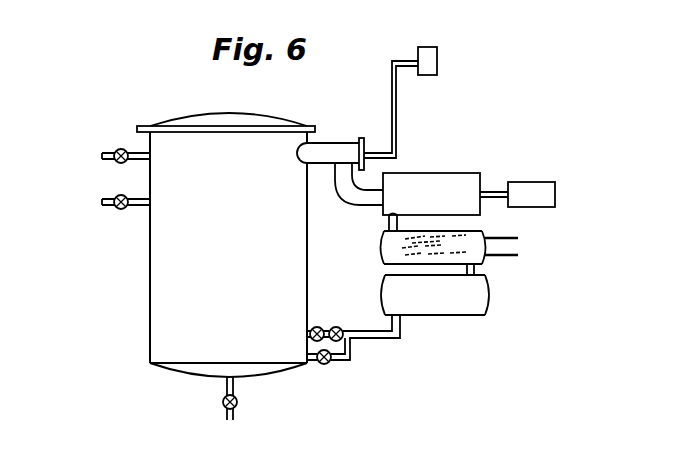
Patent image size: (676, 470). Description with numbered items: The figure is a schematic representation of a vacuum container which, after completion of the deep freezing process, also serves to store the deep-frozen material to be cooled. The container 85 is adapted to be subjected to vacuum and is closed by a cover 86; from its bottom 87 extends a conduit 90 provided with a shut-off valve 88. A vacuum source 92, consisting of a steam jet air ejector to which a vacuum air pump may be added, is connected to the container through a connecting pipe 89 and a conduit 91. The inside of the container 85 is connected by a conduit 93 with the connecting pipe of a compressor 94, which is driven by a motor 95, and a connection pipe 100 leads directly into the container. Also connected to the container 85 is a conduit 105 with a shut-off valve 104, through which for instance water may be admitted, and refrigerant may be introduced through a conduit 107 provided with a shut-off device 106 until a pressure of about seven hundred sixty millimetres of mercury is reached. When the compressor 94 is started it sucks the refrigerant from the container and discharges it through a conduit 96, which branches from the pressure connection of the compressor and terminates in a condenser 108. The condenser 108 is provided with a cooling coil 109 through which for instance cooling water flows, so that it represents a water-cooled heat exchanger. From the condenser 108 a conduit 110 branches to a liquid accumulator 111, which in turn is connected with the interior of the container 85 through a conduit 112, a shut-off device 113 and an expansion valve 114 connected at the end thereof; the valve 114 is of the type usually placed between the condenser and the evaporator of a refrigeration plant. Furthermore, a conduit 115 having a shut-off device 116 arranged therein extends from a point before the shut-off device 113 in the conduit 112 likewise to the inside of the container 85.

The container 85 is at (152, 330).
The cover 86 is at (177, 124).
The bottom 87 is at (173, 376).
The shut-off valve 88 is at (222, 403).
The connecting pipe 89 is at (340, 143).
The conduit 90 is at (235, 416).
The conduit 91 is at (390, 77).
The vacuum source 92 is at (438, 63).
The conduit 93 is at (353, 202).
The compressor 94 is at (450, 173).
The motor 95 is at (538, 182).
The conduit 96 is at (388, 230).
The connection pipe 100 is at (313, 158).
The shut-off valve 104 is at (125, 208).
The conduit 105 is at (103, 208).
The shut-off device 106 is at (115, 163).
The conduit 107 is at (105, 152).
The condenser 108 is at (388, 260).
The cooling coil 109 is at (517, 233).
The conduit 110 is at (477, 268).
The liquid accumulator 111 is at (473, 316).
The conduit 112 is at (400, 338).
The shut-off device 113 is at (350, 317).
The expansion valve 114 is at (313, 328).
The conduit 115 is at (340, 368).
The shut-off device 116 is at (323, 365).